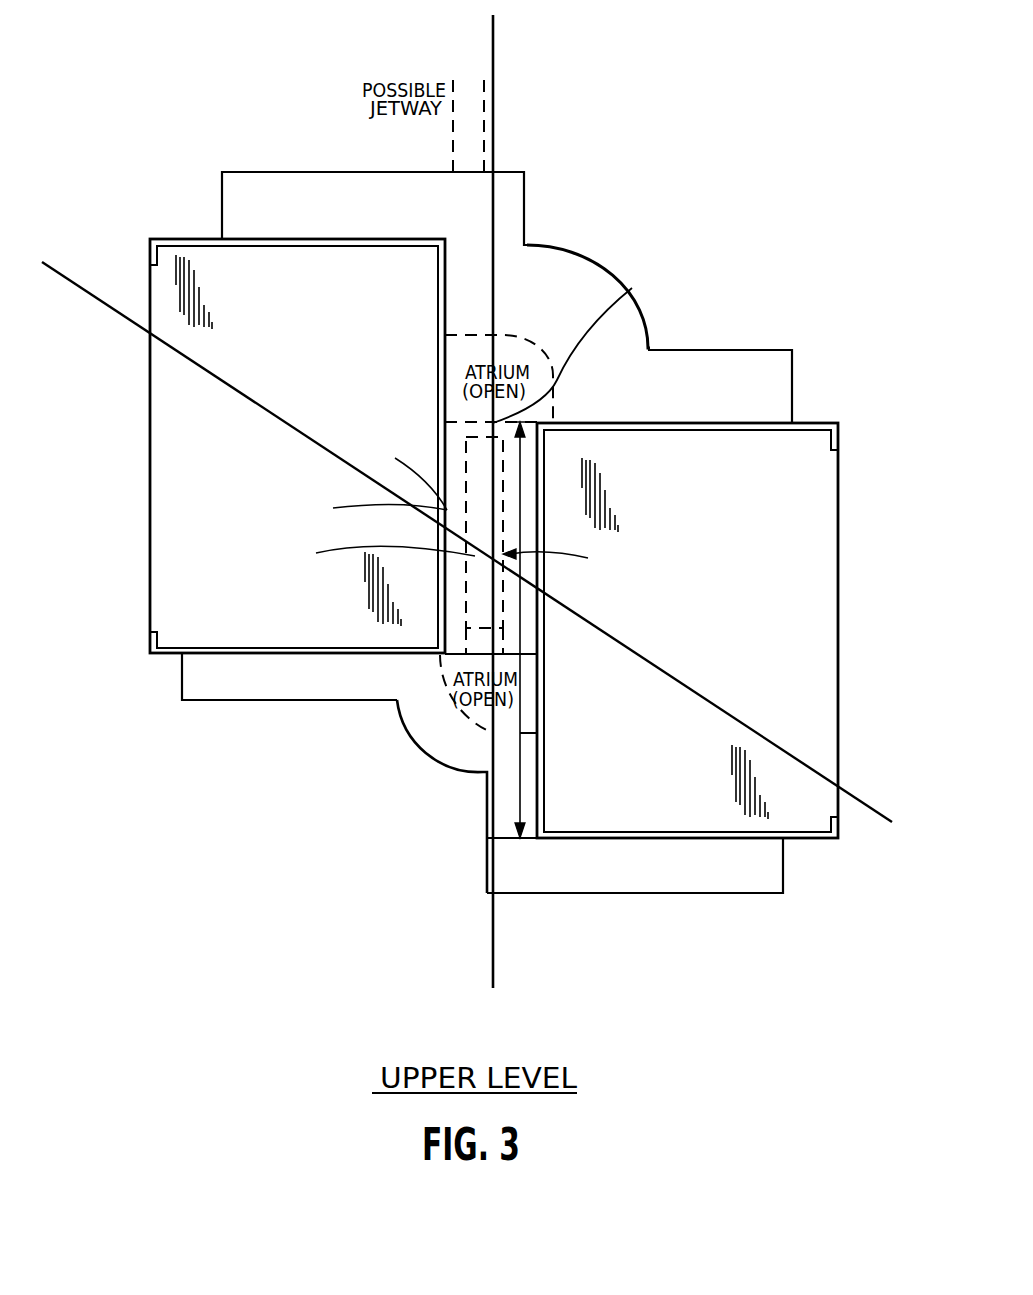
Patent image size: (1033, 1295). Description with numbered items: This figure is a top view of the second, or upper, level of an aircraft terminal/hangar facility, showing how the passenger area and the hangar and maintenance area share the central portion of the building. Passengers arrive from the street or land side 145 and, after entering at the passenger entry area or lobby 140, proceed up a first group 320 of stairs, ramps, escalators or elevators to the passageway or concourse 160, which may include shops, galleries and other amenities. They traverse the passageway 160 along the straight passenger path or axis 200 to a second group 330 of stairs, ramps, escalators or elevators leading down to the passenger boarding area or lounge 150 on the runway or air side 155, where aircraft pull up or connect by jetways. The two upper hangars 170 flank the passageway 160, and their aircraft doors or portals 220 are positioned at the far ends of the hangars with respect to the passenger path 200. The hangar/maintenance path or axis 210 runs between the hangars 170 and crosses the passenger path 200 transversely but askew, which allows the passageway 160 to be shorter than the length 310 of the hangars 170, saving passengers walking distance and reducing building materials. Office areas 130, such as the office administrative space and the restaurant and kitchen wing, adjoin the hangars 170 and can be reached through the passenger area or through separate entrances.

The passenger path or axis 200 is at (494, 68).
The air side 155 is at (707, 132).
The land side 145 is at (288, 977).
The passenger boarding area or lounge 150 is at (552, 263).
The second group of stairs, ramps, escalators, and/or elevators 330 is at (579, 343).
The office areas 130 is at (793, 363).
The hangar/maintenance path or axis 210 is at (62, 272).
The doors or portals 220 is at (150, 438).
The hangars 170 is at (170, 522).
The passageway or concourse 160 is at (390, 705).
The passenger entry area or lobby 140 is at (443, 752).
The first group of stairs, ramps, escalators, and/or elevators 320 is at (472, 625).
The length of the hangars 310 is at (517, 805).